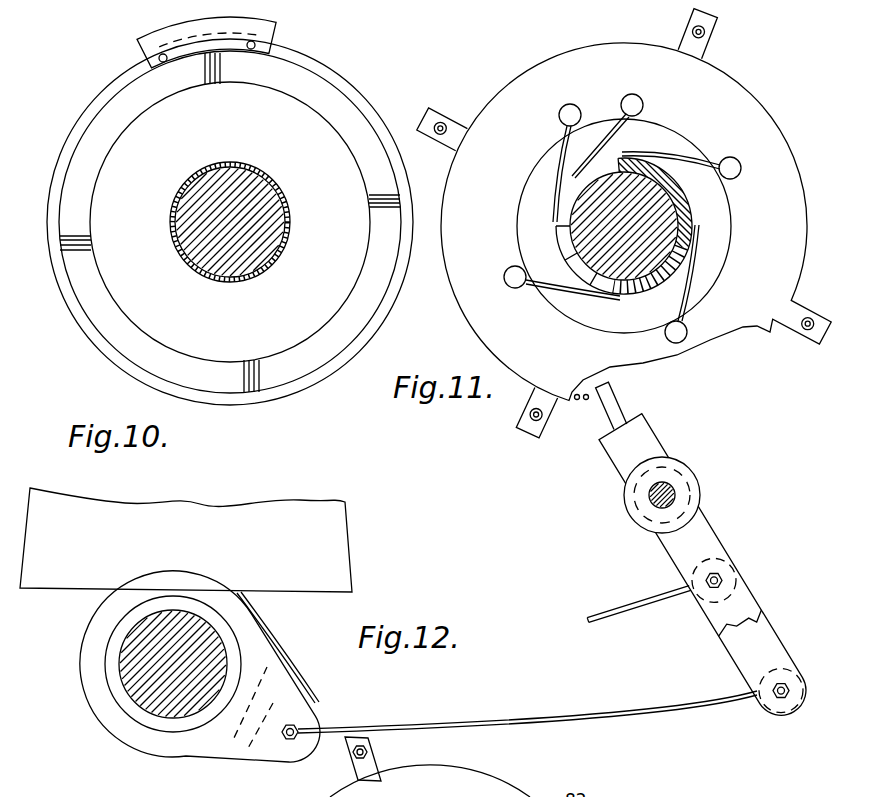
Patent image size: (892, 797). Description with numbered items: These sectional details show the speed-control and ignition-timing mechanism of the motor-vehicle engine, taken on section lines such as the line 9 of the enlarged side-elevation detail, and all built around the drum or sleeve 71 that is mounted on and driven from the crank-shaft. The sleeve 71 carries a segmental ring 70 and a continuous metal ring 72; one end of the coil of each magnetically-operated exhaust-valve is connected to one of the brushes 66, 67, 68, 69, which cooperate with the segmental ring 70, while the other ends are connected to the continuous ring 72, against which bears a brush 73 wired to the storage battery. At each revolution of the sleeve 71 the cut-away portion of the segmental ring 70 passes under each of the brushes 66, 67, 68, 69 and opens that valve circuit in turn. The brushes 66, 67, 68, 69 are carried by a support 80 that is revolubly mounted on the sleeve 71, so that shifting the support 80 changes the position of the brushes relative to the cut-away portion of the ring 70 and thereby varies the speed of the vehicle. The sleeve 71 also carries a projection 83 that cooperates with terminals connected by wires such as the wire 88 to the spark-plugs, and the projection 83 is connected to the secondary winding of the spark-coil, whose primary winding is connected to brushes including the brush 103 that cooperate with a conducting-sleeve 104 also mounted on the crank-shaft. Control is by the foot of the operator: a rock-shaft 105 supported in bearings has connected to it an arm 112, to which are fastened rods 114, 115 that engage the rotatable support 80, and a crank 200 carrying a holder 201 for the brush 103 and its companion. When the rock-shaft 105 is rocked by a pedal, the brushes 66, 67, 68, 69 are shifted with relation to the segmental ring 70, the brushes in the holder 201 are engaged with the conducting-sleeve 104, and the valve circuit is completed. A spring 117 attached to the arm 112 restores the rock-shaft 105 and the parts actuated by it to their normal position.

In FIG. 10, the section line 9 is at (279, 250).
In FIG. 10, the drum or sleeve 71 is at (288, 229).
In FIG. 10, the projection 83 is at (143, 37).
In FIG. 11, the support 80 is at (783, 129).
In FIG. 11, the brush 66 is at (556, 192).
In FIG. 11, the brush 67 is at (586, 298).
In FIG. 11, the brush 68 is at (703, 260).
In FIG. 11, the brush 69 is at (698, 156).
In FIG. 11, the segmental ring 70 is at (680, 198).
In FIG. 11, the continuous metal ring 72 is at (606, 166).
In FIG. 11, the brush 73 is at (598, 132).
In FIG. 12, the wire 88 is at (372, 745).
In FIG. 12, the brush 103 is at (288, 663).
In FIG. 12, the conducting-sleeve 104 is at (99, 718).
In FIG. 12, the rock-shaft 105 is at (650, 493).
In FIG. 12, the arm 112 is at (671, 562).
In FIG. 12, the rod 114 is at (607, 622).
In FIG. 12, the rod 115 is at (596, 716).
In FIG. 12, the spring 117 is at (583, 400).
In FIG. 12, the crank 200 is at (234, 752).
In FIG. 12, the holder 201 is at (259, 748).